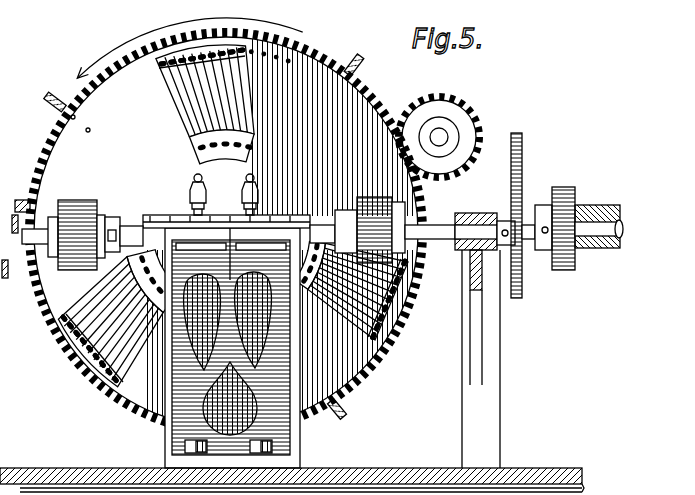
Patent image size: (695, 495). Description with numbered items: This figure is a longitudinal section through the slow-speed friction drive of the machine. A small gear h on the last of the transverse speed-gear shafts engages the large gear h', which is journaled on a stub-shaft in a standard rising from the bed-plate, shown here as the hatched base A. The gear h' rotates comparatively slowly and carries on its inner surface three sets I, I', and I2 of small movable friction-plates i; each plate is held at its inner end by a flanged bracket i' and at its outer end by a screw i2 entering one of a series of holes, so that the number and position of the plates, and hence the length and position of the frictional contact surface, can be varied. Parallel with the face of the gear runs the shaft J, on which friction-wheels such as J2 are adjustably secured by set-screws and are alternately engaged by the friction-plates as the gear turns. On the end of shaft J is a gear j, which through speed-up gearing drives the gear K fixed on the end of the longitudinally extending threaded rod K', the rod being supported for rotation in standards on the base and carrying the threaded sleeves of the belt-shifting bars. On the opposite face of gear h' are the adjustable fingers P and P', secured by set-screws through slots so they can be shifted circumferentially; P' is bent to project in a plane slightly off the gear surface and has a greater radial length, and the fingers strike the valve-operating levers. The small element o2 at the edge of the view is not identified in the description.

The base plate A is at (54, 478).
The adjustable finger P is at (355, 228).
The adjustable finger P' is at (54, 84).
The small gear h is at (452, 132).
The large gear h' is at (220, 317).
The gear j is at (522, 176).
The shaft J is at (372, 198).
The friction-wheel J2 is at (82, 213).
The gear K is at (573, 209).
The threaded rod K' is at (599, 253).
The set of friction-plates I is at (358, 294).
The set of friction-plates I' is at (214, 91).
The set of friction-plates I2 is at (110, 322).
The friction-plate i is at (234, 213).
The flanged bracket i' is at (229, 236).
The screw i2 is at (184, 58).
The stop block o2 is at (16, 200).